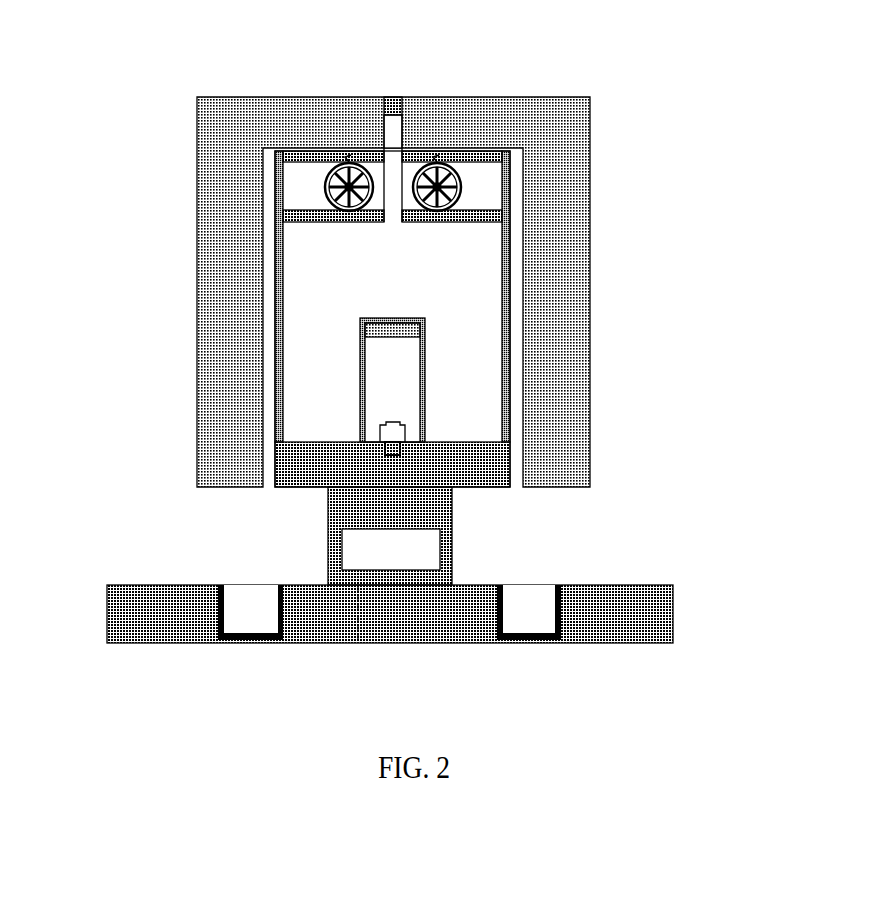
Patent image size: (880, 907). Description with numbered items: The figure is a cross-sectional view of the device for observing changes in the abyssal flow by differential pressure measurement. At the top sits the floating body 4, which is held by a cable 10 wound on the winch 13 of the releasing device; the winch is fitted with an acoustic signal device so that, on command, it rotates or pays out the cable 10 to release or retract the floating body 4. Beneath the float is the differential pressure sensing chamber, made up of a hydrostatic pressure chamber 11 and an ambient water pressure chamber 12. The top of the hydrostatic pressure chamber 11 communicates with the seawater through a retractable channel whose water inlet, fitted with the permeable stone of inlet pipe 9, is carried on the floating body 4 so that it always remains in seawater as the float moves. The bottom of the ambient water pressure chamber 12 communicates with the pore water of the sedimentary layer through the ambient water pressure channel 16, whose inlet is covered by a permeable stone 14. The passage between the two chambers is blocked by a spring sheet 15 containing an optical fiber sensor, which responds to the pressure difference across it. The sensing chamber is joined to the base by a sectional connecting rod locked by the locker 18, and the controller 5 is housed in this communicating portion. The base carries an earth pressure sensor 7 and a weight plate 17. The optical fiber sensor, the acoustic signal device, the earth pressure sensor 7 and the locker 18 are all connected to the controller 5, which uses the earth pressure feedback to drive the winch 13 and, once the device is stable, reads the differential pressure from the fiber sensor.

The floating body 4 is at (555, 360).
The controller 5 is at (365, 553).
The earth pressure sensor 7 is at (245, 602).
The permeable stone of inlet pipe 9 is at (384, 108).
The cable 10 is at (350, 156).
The hydrostatic pressure chamber 11 is at (308, 293).
The ambient water pressure chamber 12 is at (391, 356).
The winch 13 is at (440, 185).
The permeable stone 14 is at (322, 457).
The spring sheet 15 is at (407, 337).
The ambient water pressure channel 16 is at (392, 447).
The weight plate 17 is at (413, 594).
The locker 18 is at (360, 628).